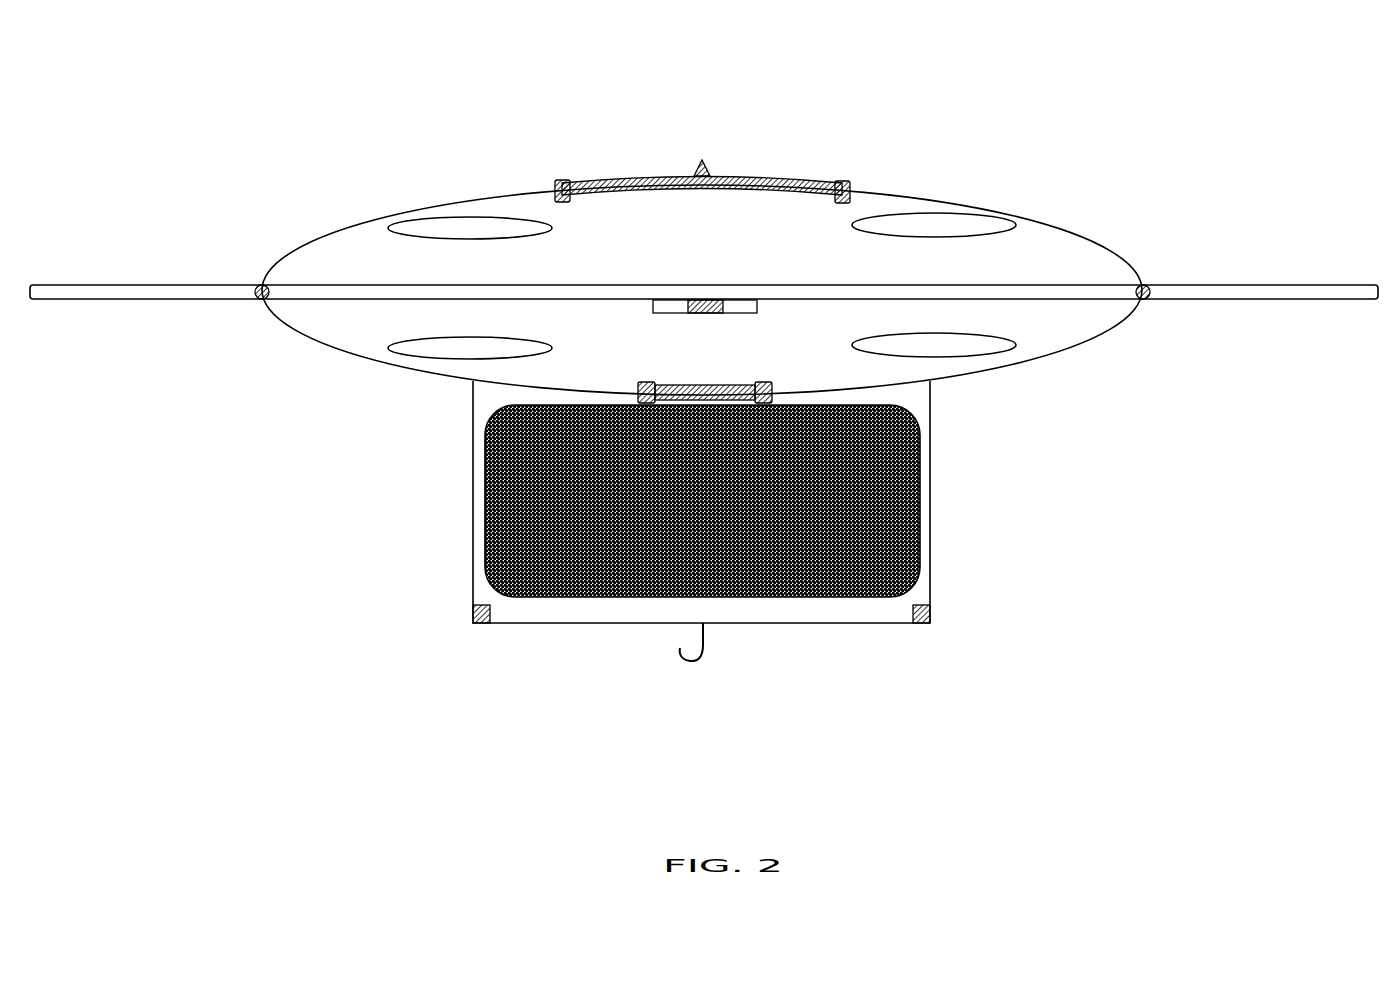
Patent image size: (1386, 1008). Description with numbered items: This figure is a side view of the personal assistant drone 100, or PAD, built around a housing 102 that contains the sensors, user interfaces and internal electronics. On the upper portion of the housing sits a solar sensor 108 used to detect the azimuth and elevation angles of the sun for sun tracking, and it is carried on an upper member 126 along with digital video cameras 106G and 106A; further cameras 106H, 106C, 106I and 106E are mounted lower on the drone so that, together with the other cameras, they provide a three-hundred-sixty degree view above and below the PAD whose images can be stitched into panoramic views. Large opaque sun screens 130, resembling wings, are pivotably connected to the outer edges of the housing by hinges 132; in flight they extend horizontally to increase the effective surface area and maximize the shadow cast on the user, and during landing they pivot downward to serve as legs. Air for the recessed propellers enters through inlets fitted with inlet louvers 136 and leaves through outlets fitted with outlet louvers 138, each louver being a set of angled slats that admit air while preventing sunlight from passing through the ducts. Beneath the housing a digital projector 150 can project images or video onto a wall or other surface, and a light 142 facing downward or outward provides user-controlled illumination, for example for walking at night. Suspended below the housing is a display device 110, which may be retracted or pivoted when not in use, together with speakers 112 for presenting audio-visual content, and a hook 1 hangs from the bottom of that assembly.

The personal assistant drone 100 is at (335, 677).
The housing 102 is at (373, 218).
The solar sensor 108 is at (701, 158).
The top rail 126 is at (748, 176).
The digital video camera 106A is at (842, 181).
The digital video camera 106G is at (562, 180).
The digital video camera 106C is at (770, 402).
The digital video camera 106H is at (645, 404).
The digital video camera 106I is at (478, 622).
The digital video camera 106E is at (932, 622).
The sun screen 130 is at (127, 285).
The hinge 132 is at (262, 285).
The inlet louver 136 is at (447, 216).
The outlet louver 138 is at (443, 359).
The digital projector 150 is at (698, 316).
The light 142 is at (740, 316).
The display device 110 is at (555, 514).
The speaker 112 is at (722, 403).
The hook 1 is at (702, 658).